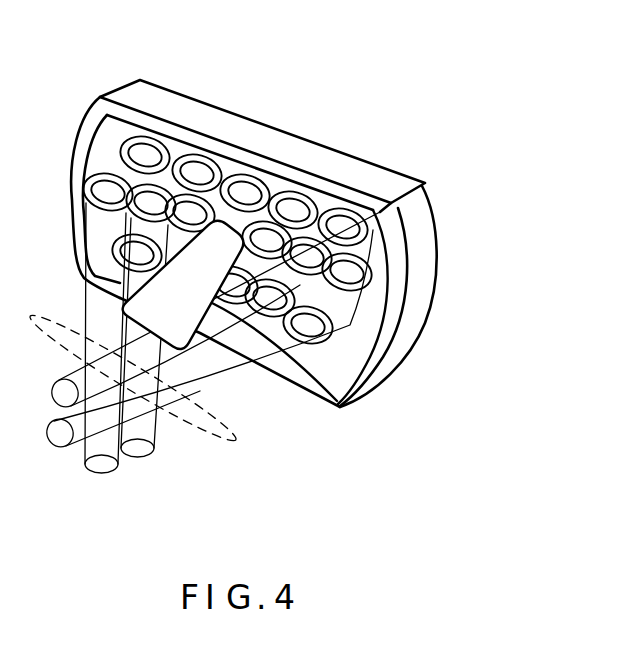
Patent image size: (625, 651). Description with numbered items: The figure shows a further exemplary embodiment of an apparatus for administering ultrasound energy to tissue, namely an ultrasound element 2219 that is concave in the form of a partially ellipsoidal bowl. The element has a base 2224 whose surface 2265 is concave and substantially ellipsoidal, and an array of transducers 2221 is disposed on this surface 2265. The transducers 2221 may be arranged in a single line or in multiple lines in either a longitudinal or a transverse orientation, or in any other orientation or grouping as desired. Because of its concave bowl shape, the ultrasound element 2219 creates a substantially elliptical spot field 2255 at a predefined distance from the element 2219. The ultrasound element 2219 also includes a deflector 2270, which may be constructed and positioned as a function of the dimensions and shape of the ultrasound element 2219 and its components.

The ultrasound element 2219 is at (456, 262).
The transducers 2221 is at (208, 185).
The base 2224 is at (422, 327).
The surface 2265 is at (363, 210).
The deflector 2270 is at (220, 233).
The spot field 2255 is at (230, 452).